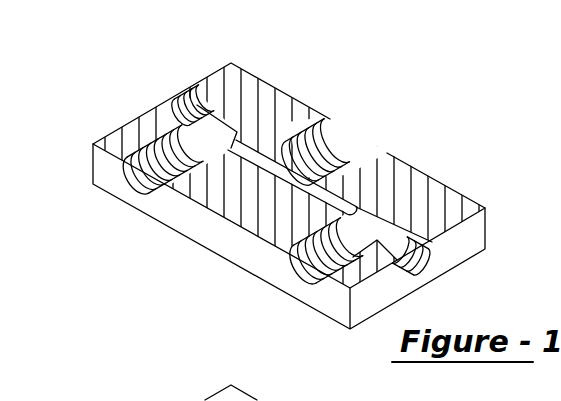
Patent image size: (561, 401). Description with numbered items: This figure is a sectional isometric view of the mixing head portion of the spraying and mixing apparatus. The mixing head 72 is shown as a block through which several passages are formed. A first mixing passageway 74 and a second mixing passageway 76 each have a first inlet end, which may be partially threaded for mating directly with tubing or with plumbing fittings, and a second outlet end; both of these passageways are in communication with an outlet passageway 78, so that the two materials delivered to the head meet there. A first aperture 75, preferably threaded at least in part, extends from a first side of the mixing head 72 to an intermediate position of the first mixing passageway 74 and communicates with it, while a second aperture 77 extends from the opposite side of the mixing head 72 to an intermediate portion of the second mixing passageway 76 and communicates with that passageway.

The mixing head 72 is at (200, 236).
The first mixing passageway 74 is at (247, 150).
The first aperture 75 is at (167, 115).
The second mixing passageway 76 is at (347, 207).
The second aperture 77 is at (427, 262).
The outlet passageway 78 is at (333, 143).